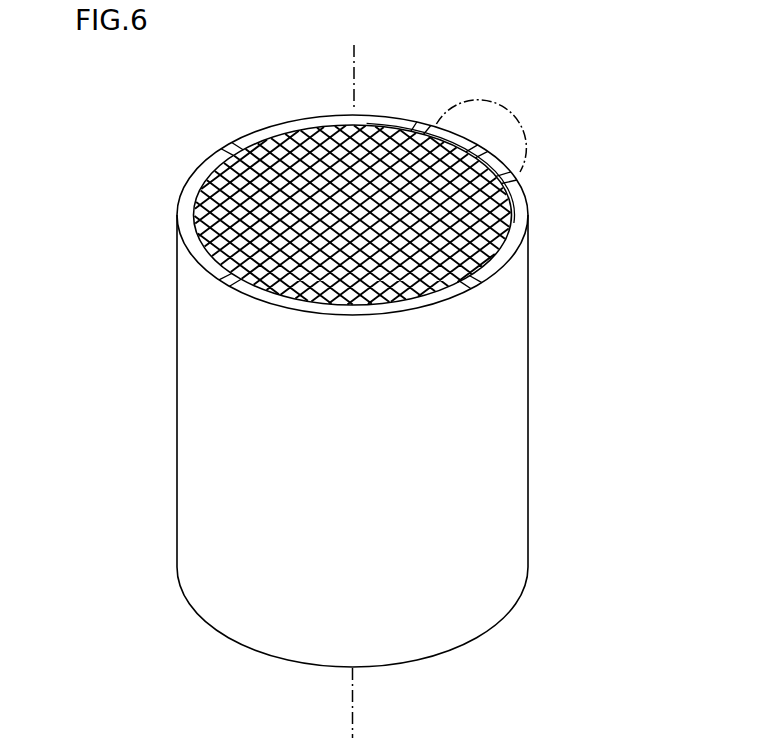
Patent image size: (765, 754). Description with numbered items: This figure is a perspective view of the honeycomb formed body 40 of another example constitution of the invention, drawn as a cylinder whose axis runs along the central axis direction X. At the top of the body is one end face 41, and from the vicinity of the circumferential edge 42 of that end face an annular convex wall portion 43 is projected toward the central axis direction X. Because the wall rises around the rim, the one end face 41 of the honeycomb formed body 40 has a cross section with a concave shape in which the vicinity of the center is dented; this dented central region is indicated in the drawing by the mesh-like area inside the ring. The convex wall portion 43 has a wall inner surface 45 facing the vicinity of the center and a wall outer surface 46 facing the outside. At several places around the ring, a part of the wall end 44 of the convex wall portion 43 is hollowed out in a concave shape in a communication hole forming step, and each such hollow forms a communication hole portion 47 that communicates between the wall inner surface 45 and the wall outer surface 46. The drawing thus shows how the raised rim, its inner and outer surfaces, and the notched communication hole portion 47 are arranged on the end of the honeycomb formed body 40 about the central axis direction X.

The honeycomb formed body 40 is at (500, 71).
The one end face 41 is at (226, 158).
The circumferential edge 42 is at (397, 107).
The convex wall portion 43 is at (402, 215).
The wall end 44 is at (513, 173).
The wall inner surface 45 is at (298, 130).
The wall outer surface 46 is at (528, 250).
The communication hole portion 47 is at (475, 285).
The central axis direction X is at (356, 697).